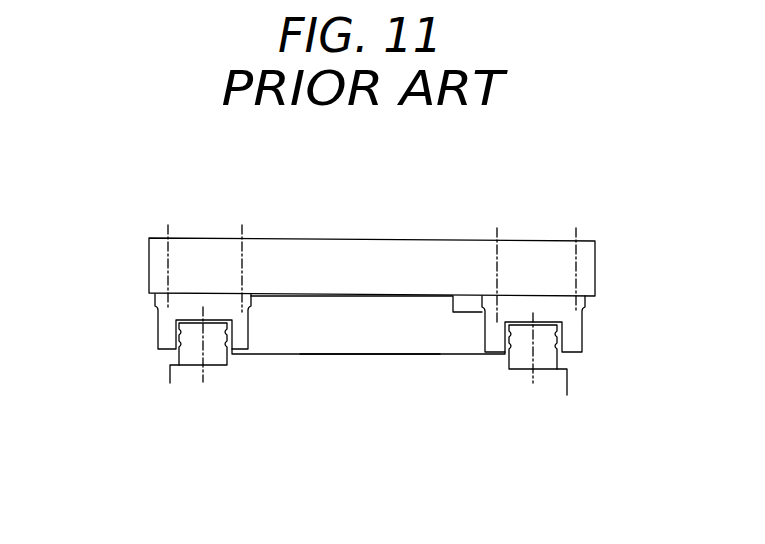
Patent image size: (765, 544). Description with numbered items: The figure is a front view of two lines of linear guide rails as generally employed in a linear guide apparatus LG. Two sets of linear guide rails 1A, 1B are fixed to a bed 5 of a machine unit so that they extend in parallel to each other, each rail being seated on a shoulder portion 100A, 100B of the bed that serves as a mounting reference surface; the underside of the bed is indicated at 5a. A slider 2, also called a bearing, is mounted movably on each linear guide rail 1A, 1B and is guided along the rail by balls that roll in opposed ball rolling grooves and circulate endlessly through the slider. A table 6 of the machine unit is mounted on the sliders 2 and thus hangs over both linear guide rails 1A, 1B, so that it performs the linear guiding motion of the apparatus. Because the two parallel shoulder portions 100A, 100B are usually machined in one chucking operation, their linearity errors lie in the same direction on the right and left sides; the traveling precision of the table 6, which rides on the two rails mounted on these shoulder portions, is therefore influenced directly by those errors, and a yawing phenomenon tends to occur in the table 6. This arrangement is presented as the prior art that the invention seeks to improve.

The table 6 is at (311, 256).
The slider 2 is at (184, 308).
The linear guide apparatus LG is at (137, 323).
The bed 5 is at (345, 364).
The bottom surface of base plate 5a is at (406, 356).
The linear guide rail 1A is at (542, 353).
The linear guide rail 1B is at (192, 346).
The shoulder portion 100A is at (497, 374).
The shoulder portion 100B is at (238, 370).